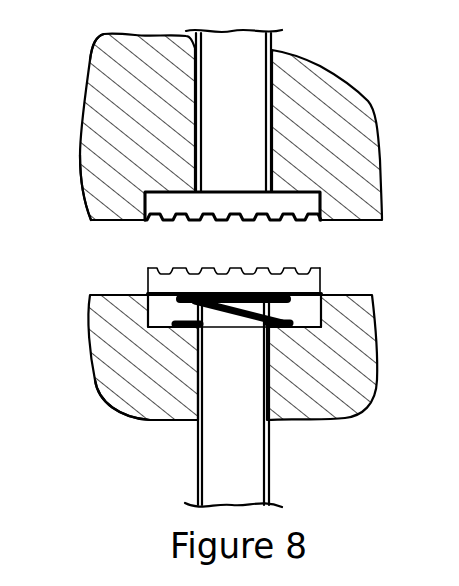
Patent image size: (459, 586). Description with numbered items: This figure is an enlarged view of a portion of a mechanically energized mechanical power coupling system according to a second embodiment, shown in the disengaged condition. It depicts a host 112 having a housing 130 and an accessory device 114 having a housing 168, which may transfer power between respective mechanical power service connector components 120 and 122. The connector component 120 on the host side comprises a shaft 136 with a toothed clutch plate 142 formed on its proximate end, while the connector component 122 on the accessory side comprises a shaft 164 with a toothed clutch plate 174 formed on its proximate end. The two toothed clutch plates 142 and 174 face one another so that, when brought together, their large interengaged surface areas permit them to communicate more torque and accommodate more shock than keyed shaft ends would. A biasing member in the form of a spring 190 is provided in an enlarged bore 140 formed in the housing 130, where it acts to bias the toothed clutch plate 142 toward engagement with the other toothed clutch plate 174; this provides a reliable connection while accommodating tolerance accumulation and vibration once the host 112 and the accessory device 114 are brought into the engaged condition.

The host 112 is at (108, 410).
The accessory device 114 is at (82, 116).
The mechanical power service connector component 120 is at (177, 286).
The mechanical power service connector component 122 is at (110, 181).
The housing 130 is at (95, 371).
The shaft 136 is at (200, 448).
The enlarged bore 140 is at (312, 311).
The toothed clutch plate 142 is at (306, 283).
The shaft 164 is at (245, 73).
The housing 168 is at (106, 50).
The toothed clutch plate 174 is at (282, 207).
The spring 190 is at (196, 306).